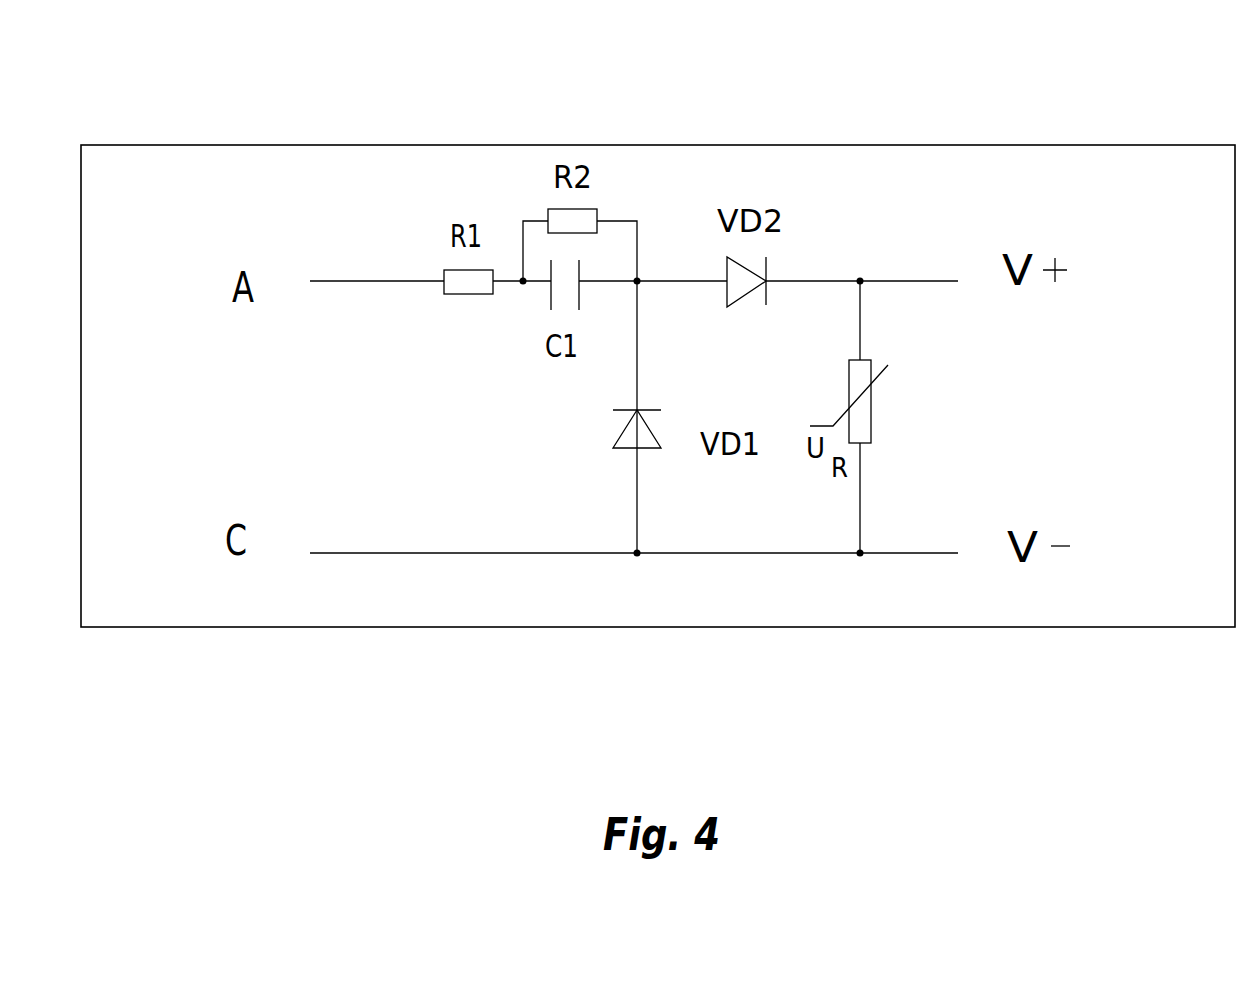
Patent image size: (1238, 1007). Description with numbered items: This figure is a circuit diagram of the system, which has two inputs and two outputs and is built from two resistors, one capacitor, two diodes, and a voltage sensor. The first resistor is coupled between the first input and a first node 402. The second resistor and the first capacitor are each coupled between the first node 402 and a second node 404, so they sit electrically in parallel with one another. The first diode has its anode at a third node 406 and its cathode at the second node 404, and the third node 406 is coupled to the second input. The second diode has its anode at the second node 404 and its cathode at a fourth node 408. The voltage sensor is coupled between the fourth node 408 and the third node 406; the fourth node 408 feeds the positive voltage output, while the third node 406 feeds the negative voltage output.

The first node 402 is at (523, 281).
The second node 404 is at (637, 281).
The third node 406 is at (861, 553).
The fourth node 408 is at (860, 281).